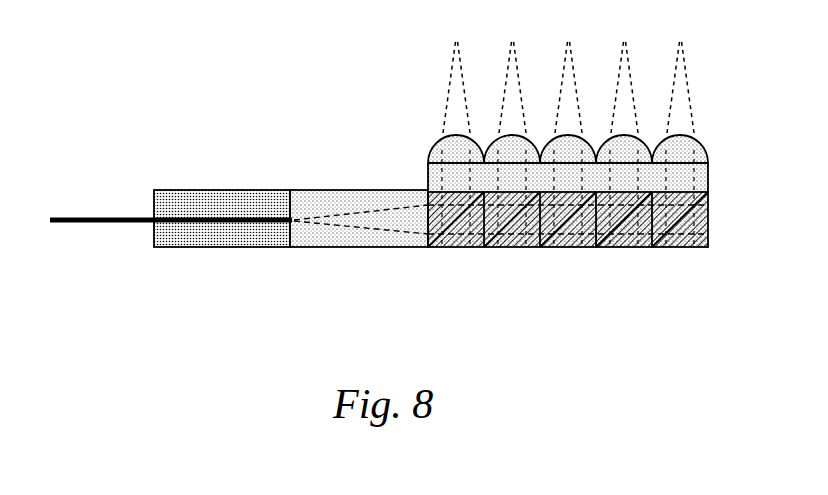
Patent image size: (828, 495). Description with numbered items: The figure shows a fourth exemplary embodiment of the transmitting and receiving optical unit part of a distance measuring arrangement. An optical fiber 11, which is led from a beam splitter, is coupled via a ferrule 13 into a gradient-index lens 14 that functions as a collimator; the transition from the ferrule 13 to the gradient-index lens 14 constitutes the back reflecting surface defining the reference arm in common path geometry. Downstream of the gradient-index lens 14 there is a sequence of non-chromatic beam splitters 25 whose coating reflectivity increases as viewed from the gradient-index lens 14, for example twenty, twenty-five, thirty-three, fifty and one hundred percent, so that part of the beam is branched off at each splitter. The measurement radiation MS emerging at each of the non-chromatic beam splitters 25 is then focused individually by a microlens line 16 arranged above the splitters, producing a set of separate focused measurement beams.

The optical fiber 11 is at (140, 222).
The ferrule 13 is at (240, 193).
The gradient-index lens 14 is at (353, 202).
The microlens line 16 is at (433, 149).
The non-chromatic beam splitters 25 is at (518, 242).
The measurement radiation MS is at (550, 85).